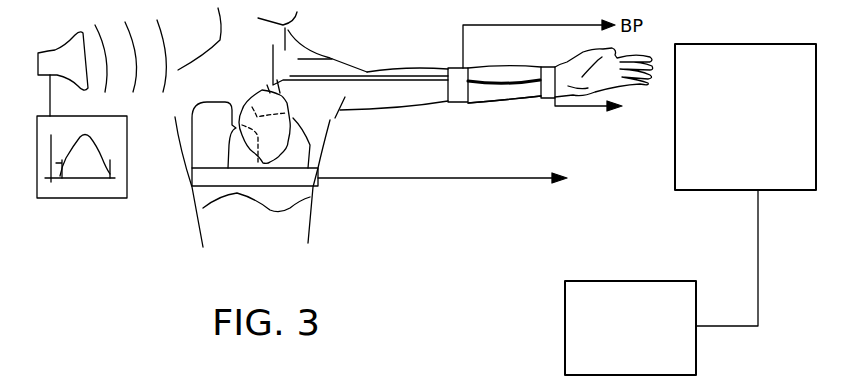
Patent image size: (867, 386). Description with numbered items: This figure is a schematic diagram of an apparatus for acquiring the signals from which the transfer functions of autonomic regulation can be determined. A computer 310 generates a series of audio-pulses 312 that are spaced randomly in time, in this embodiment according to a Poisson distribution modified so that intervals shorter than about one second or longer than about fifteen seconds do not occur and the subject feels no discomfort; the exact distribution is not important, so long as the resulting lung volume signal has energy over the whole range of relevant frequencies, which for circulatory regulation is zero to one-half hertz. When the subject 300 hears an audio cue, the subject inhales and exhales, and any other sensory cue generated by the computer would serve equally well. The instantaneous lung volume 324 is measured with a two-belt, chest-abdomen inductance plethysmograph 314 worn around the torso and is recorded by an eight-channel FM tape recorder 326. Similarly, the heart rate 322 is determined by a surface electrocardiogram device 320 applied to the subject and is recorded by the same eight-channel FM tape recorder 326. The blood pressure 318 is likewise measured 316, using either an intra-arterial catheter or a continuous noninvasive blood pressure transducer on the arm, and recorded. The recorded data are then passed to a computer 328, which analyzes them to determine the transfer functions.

The patient 300 is at (220, 38).
The computer 310 is at (89, 198).
The audio-pulses 312 is at (63, 45).
The two-belt, chest-abdomen inductance plethysmograph 314 is at (320, 173).
The blood pressure measurement 316 is at (453, 68).
The blood pressure 318 is at (568, 27).
The surface electrocardiogram device 320 is at (545, 97).
The heart rate 322 is at (590, 108).
The instantaneous lung volume 324 is at (522, 180).
The 8 channel FM tape recorder 326 is at (722, 190).
The computer 328 is at (565, 309).